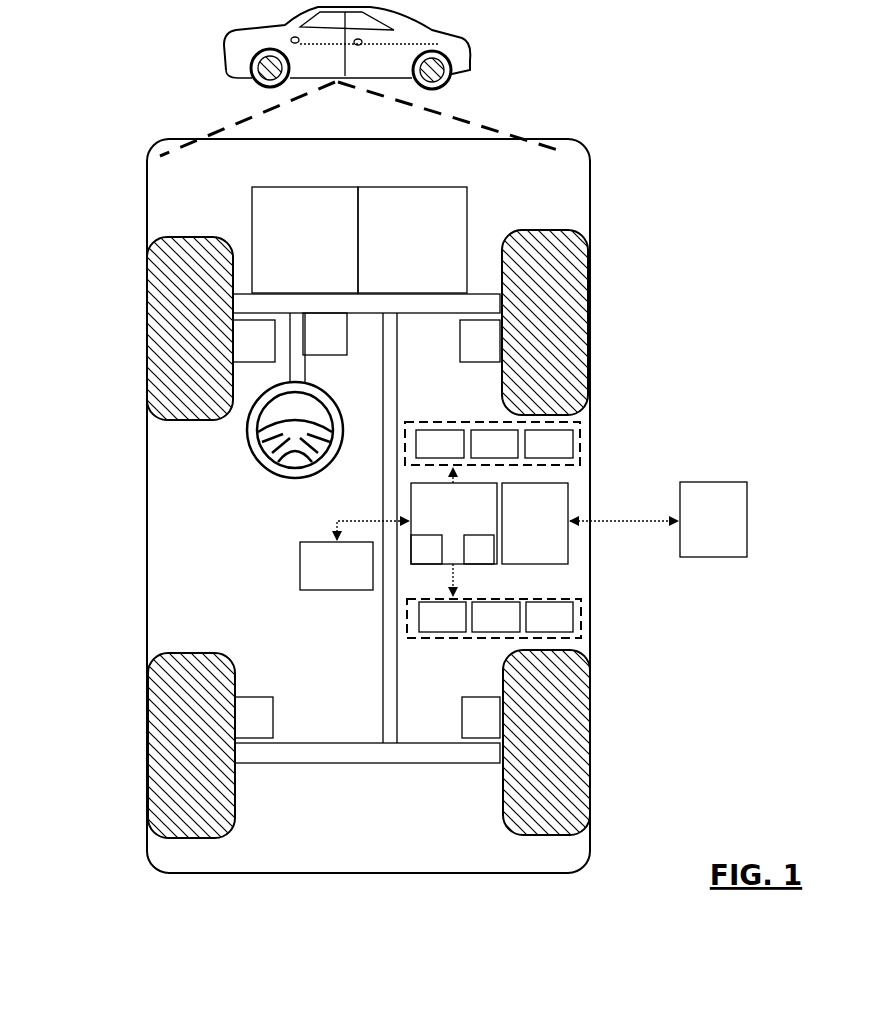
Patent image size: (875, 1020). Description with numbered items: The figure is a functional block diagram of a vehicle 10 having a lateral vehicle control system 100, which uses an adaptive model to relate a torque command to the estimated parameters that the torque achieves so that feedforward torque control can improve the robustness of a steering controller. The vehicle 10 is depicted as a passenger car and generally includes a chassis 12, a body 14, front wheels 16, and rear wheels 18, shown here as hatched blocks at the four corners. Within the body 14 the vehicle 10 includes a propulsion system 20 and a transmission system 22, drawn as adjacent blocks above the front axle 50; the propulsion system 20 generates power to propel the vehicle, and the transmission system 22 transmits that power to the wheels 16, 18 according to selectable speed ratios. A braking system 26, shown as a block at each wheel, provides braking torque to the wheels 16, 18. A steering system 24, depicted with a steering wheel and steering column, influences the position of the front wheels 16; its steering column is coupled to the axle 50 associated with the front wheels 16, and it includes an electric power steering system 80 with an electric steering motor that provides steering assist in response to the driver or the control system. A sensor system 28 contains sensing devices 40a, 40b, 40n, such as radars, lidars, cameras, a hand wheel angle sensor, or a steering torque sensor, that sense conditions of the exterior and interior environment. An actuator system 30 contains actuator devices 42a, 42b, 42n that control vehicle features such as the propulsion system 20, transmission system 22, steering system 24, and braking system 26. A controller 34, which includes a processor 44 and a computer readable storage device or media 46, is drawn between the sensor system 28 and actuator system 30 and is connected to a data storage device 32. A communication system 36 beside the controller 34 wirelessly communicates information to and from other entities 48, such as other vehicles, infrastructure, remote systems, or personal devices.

The vehicle 10 is at (222, 56).
The lateral vehicle control system 100 is at (618, 163).
The chassis 12 is at (383, 680).
The body 14 is at (147, 503).
The front wheels 16 is at (190, 237).
The rear wheels 18 is at (207, 839).
The propulsion system 20 is at (305, 240).
The transmission system 22 is at (412, 240).
The steering system 24 is at (228, 456).
The braking system 26 is at (366, 529).
The sensor system 28 is at (478, 421).
The actuator system 30 is at (460, 638).
The data storage device 32 is at (354, 555).
The controller 34 is at (454, 532).
The communication system 36 is at (590, 523).
The sensing device 40a is at (440, 444).
The sensing device 40b is at (494, 444).
The sensing device 40n is at (549, 444).
The actuator device 42a is at (442, 617).
The actuator device 42b is at (496, 617).
The actuator device 42n is at (549, 617).
The processor 44 is at (426, 549).
The computer readable storage device or media 46 is at (479, 549).
The other entities 48 is at (713, 519).
The axle 50 is at (425, 313).
The electric power steering (EPS) system 80 is at (325, 334).